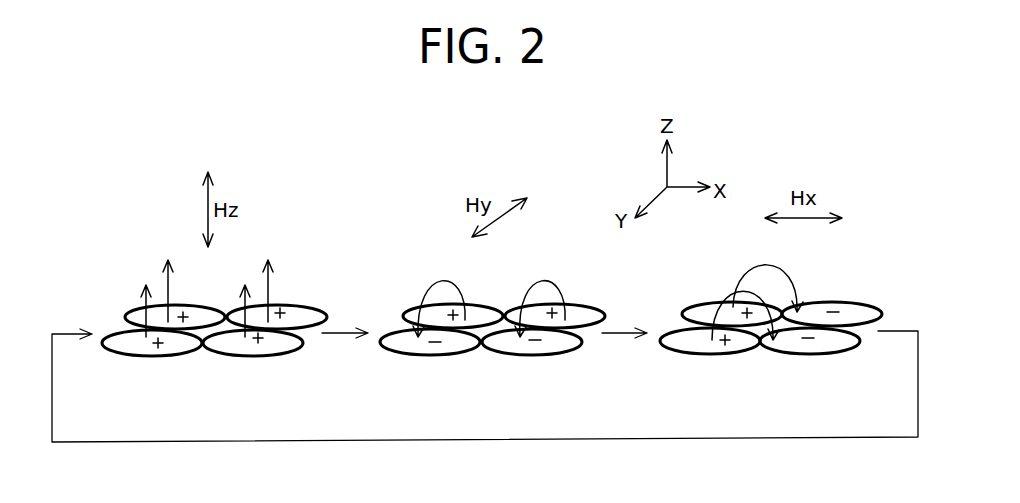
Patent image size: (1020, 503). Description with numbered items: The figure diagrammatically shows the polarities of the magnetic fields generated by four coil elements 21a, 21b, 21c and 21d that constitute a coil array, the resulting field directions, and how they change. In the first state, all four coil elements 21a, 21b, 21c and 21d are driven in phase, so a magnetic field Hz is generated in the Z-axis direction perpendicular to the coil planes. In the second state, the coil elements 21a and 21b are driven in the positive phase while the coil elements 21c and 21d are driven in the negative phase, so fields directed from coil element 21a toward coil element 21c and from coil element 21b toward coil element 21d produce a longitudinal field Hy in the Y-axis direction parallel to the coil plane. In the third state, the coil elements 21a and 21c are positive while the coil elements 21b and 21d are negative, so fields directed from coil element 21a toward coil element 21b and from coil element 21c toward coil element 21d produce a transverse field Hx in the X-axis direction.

The coil element 21a is at (137, 310).
The coil element 21b is at (303, 312).
The coil element 21c is at (122, 347).
The coil element 21d is at (275, 348).